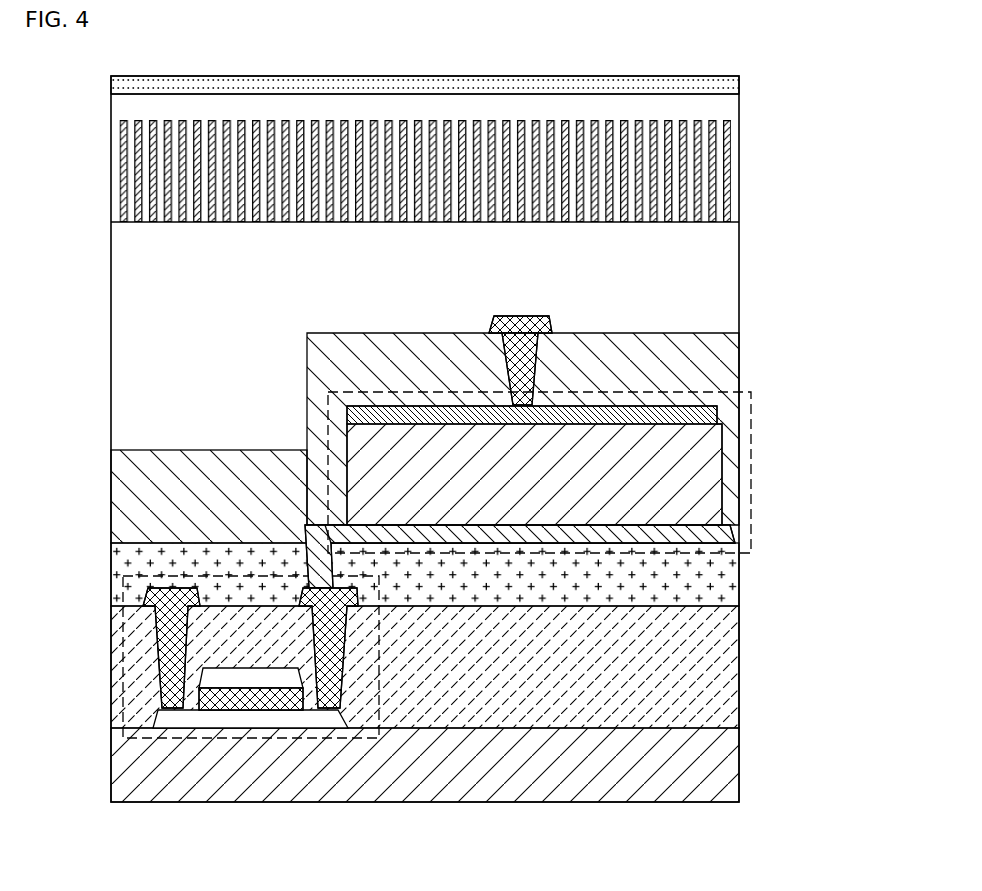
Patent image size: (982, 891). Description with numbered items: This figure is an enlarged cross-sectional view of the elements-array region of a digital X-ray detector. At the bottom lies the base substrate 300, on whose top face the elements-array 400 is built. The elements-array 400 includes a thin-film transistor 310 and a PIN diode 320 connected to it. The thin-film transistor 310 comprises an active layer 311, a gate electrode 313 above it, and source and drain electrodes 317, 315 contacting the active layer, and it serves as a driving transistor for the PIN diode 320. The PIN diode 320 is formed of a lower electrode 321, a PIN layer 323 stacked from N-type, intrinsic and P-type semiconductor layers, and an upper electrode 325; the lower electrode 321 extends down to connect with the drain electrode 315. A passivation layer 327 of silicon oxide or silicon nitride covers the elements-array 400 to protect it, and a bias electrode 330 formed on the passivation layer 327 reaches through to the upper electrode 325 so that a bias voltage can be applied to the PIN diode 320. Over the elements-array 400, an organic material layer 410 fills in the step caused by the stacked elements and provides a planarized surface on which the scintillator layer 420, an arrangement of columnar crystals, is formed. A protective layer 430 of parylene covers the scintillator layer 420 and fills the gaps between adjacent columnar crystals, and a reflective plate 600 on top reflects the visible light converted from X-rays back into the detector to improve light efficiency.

The base substrate 300 is at (725, 762).
The thin-film transistor 310 is at (379, 676).
The active layer 311 is at (223, 720).
The gate electrode 313 is at (272, 680).
The drain electrode 315 is at (330, 667).
The source electrode 317 is at (175, 667).
The PIN diode 320 is at (745, 553).
The lower electrode 321 is at (705, 531).
The PIN layer 323 is at (705, 467).
The upper electrode 325 is at (705, 416).
The passivation layer 327 is at (130, 497).
The bias electrode 330 is at (525, 360).
The elements-array 400 is at (851, 347).
The organic material layer 410 is at (711, 244).
The scintillator layer 420 is at (728, 178).
The protective layer 430 is at (728, 107).
The reflective plate 600 is at (740, 81).